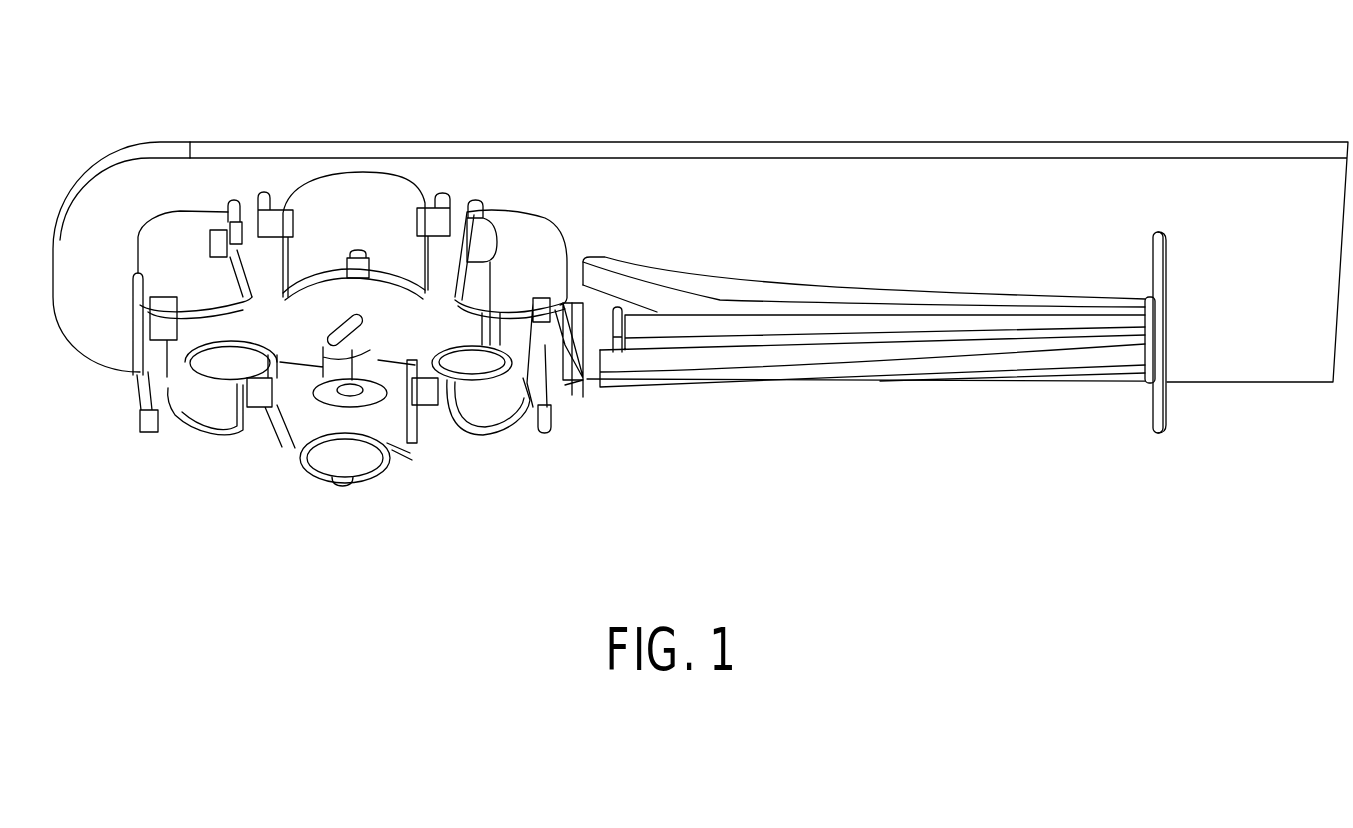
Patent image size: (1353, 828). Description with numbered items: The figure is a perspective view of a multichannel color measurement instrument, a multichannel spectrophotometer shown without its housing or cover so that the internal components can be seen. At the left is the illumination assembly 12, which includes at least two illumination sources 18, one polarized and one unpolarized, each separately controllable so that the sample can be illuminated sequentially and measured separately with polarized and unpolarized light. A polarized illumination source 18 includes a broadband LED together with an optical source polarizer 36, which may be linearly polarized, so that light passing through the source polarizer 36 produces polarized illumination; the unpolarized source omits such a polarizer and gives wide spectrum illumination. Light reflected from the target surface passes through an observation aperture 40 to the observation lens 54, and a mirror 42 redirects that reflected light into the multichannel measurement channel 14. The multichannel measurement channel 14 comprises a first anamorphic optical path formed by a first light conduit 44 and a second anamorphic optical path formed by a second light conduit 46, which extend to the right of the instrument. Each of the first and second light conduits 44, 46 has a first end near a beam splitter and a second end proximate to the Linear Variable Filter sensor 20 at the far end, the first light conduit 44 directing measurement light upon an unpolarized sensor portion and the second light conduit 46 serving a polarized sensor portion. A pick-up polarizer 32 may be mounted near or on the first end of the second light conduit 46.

The illumination assembly 12 is at (195, 447).
The multichannel measurement channel 14 is at (845, 395).
The illumination source 18 is at (358, 202).
The Linear Variable Filter sensor 20 is at (1147, 372).
The pick-up polarizer 32 is at (618, 324).
The optical source polarizer 36 is at (372, 485).
The observation aperture 40 is at (350, 395).
The mirror 42 is at (355, 345).
The first light conduit 44 is at (743, 383).
The second light conduit 46 is at (948, 327).
The observation lens 54 is at (325, 345).